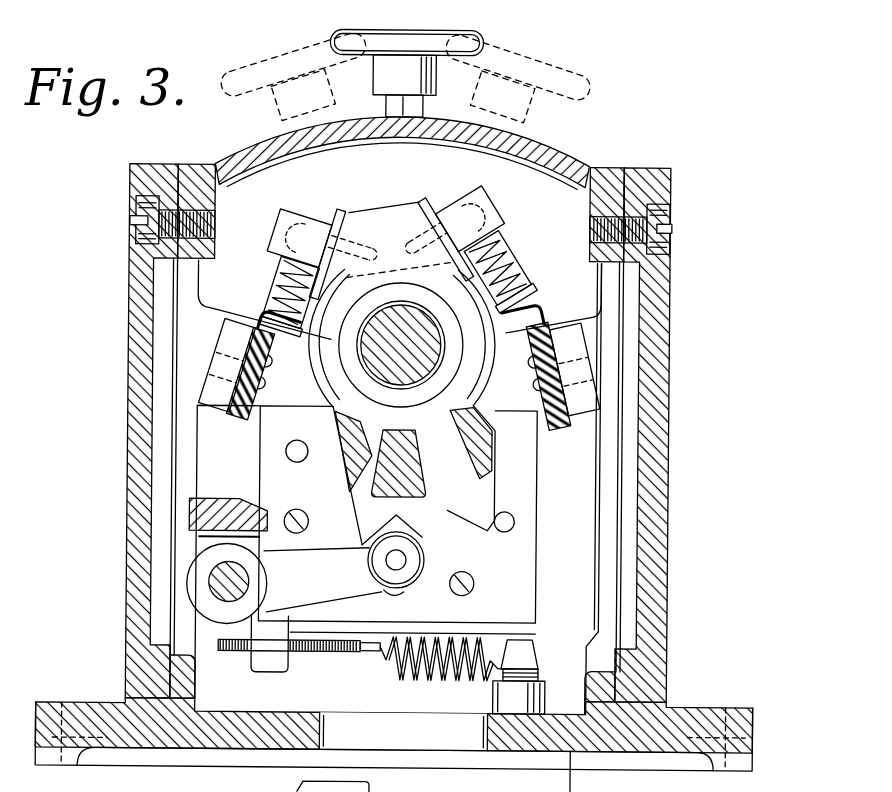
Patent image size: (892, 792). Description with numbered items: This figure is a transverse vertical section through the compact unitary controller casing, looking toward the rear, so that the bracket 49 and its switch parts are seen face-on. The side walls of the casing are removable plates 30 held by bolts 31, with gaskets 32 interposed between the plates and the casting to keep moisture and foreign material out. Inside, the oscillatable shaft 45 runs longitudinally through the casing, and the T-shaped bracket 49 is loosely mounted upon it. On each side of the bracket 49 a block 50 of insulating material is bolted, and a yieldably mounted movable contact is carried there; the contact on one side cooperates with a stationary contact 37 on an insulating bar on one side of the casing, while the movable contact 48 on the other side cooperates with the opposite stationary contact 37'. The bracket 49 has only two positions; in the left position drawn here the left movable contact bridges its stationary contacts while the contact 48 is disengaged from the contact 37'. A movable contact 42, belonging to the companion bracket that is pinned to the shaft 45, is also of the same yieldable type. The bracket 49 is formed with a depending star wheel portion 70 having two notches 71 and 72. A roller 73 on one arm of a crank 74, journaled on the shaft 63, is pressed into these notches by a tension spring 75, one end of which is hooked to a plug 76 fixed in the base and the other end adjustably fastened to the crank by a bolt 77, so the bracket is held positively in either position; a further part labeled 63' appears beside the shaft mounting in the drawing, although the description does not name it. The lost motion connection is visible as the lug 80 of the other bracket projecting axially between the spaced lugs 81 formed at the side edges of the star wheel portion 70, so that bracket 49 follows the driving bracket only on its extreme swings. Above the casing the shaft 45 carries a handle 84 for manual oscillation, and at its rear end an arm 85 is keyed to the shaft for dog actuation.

The plates 30 is at (128, 530).
The bolts 31 is at (133, 213).
The gaskets 32 is at (622, 180).
The stationary contact 37 is at (249, 353).
The stationary contact 37' is at (552, 360).
The movable contact 42 is at (288, 322).
The oscillatable shaft 45 is at (407, 350).
The movable contact 48 is at (518, 282).
The T-shaped bracket 49 is at (371, 226).
The block of insulating material 50 is at (447, 205).
The shaft 63 is at (163, 582).
The terminal block 63' is at (169, 503).
The star wheel portion 70 is at (477, 497).
The notch 71 is at (390, 523).
The notch 72 is at (462, 523).
The roller 73 is at (427, 562).
The crank 74 is at (325, 596).
The tension spring 75 is at (418, 664).
The plug 76 is at (538, 646).
The bolt 77 is at (340, 655).
The lug 80 is at (407, 470).
The spaced lugs 81 is at (338, 467).
The handle 84 is at (476, 44).
The arm 85 is at (303, 788).